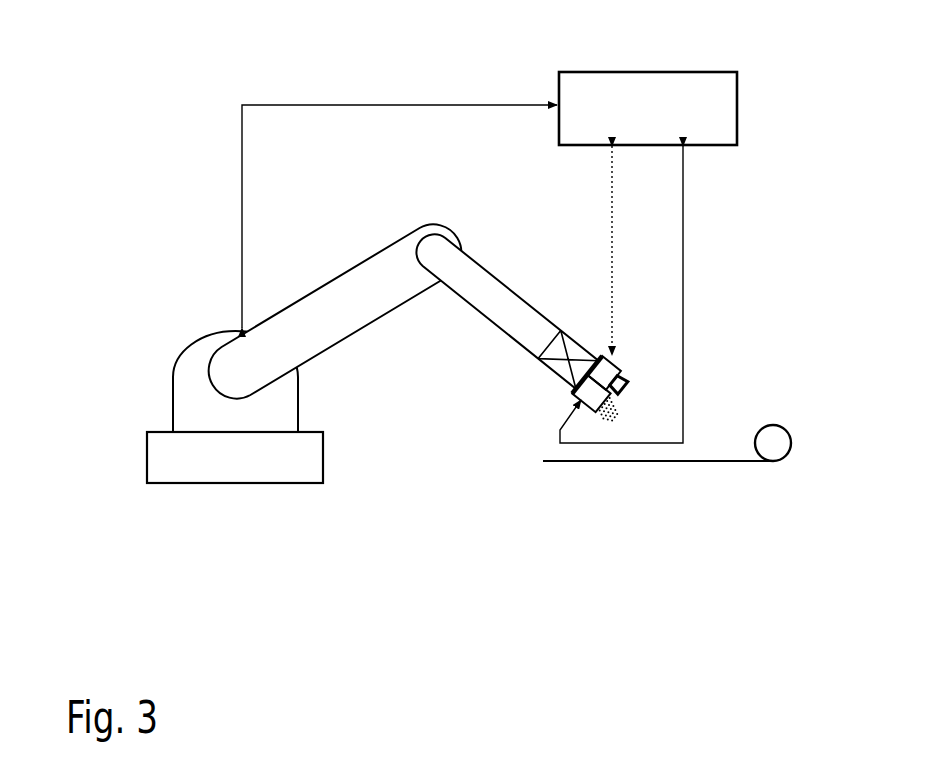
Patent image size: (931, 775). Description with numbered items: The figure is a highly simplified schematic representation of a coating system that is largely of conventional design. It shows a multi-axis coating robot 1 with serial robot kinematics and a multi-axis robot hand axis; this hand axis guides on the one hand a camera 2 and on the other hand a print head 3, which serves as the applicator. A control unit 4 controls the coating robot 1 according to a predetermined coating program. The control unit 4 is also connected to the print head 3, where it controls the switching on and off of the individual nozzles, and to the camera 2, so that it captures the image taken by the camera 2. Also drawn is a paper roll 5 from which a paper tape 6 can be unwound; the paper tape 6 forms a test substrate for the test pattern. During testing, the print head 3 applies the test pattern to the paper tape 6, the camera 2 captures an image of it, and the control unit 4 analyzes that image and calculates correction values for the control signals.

The coating robot 1 is at (241, 502).
The camera 2 is at (621, 366).
The print head 3 is at (570, 393).
The control unit 4 is at (652, 71).
The paper roll 5 is at (770, 440).
The paper tape 6 is at (685, 460).